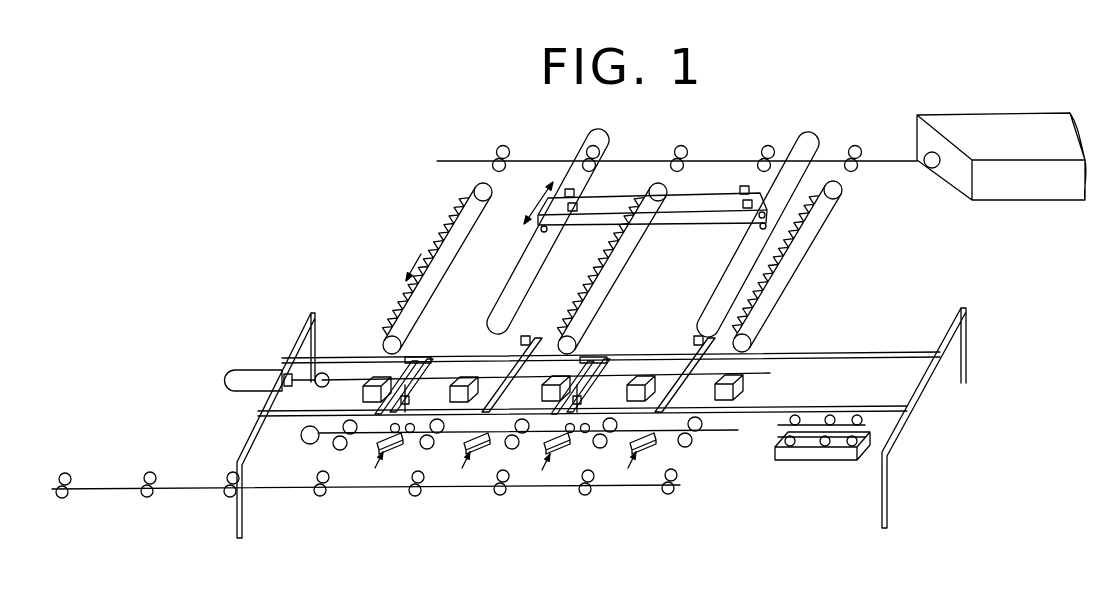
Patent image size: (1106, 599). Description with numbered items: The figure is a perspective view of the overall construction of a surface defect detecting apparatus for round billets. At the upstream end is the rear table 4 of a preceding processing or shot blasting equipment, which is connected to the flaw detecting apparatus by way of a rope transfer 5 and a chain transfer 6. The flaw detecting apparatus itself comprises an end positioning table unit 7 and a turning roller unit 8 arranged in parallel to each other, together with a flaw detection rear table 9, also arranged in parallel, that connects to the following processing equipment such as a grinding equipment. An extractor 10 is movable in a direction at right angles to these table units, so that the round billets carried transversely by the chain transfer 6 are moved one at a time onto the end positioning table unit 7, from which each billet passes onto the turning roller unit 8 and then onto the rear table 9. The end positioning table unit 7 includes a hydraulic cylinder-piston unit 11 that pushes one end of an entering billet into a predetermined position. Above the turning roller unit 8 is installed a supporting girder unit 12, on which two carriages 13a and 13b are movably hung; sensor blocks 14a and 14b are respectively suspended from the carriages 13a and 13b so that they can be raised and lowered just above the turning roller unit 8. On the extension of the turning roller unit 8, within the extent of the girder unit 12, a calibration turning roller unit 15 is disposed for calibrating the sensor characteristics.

The rear table 4 is at (688, 152).
The rope transfer 5 is at (680, 212).
The chain transfer 6 is at (436, 247).
The end positioning table unit 7 is at (372, 382).
The turning roller unit 8 is at (322, 438).
The flaw detection rear table 9 is at (320, 494).
The extractor 10 is at (566, 445).
The hydraulic cylinder-piston unit 11 is at (262, 368).
The supporting girder unit 12 is at (896, 351).
The carriage 13a is at (426, 356).
The carriage 13b is at (598, 354).
The sensor block 14a is at (408, 437).
The sensor block 14b is at (578, 437).
The calibration turning roller unit 15 is at (836, 463).